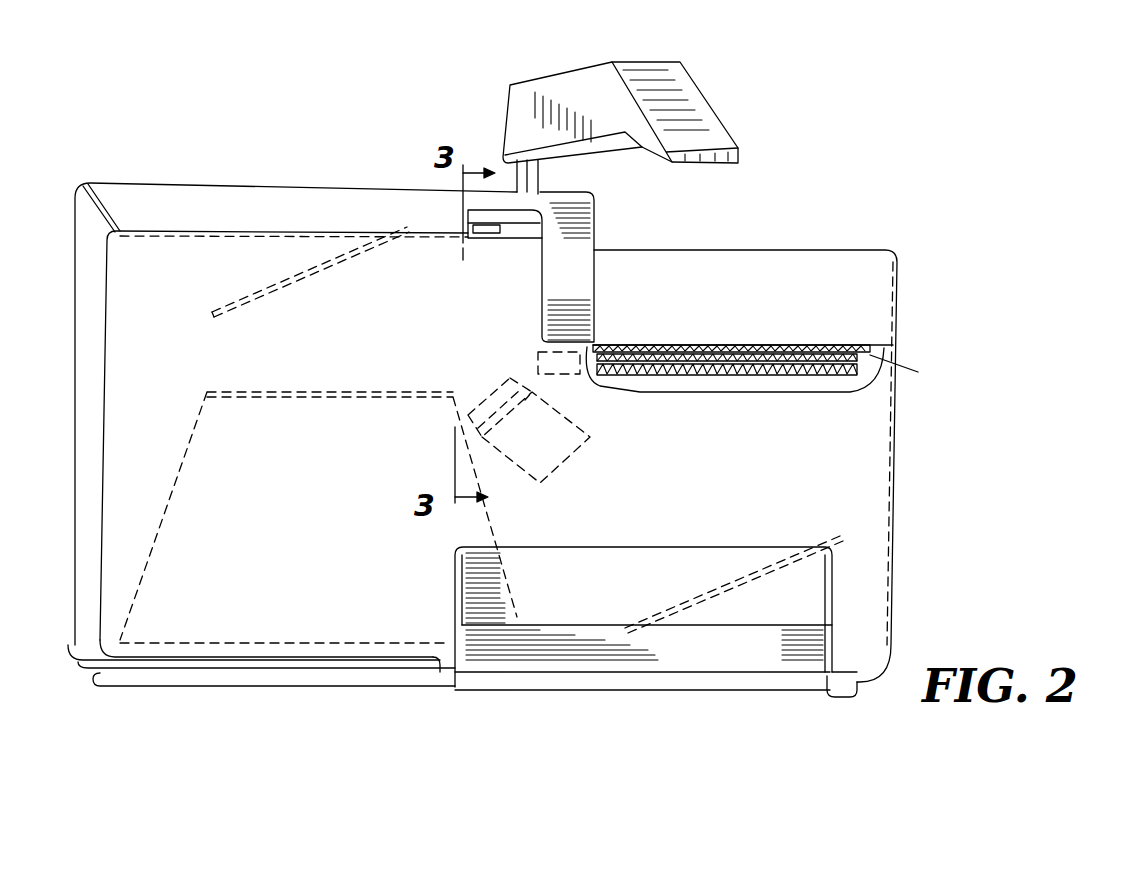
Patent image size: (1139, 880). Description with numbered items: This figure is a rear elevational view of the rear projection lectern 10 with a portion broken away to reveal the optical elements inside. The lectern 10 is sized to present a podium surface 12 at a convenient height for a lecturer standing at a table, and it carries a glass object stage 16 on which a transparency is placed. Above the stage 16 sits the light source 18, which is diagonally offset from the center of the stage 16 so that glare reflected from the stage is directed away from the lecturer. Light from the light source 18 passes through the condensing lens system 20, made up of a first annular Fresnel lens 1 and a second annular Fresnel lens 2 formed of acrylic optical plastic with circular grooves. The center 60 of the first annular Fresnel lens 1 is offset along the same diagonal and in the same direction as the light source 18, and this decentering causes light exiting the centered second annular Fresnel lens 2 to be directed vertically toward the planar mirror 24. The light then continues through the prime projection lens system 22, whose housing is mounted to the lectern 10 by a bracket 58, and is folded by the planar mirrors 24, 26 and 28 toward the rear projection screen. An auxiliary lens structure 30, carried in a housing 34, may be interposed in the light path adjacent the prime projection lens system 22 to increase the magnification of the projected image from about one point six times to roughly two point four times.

The rear projection lectern 10 is at (887, 238).
The podium surface 12 is at (263, 200).
The light source 18 is at (690, 105).
The glass object stage 16 is at (820, 350).
The condensing lens system 20 is at (727, 345).
The center of the first annular Fresnel lens 60 is at (657, 360).
The second annular Fresnel lens 2 is at (762, 376).
The first annular Fresnel lens 1 is at (902, 371).
The bracket 58 is at (585, 380).
The prime projection lens system 22 is at (518, 377).
The auxiliary lens structure 30 is at (563, 457).
The housing 34 is at (587, 435).
The planar mirror 26 is at (325, 263).
The planar mirror 28 is at (193, 430).
The planar mirror 24 is at (815, 540).